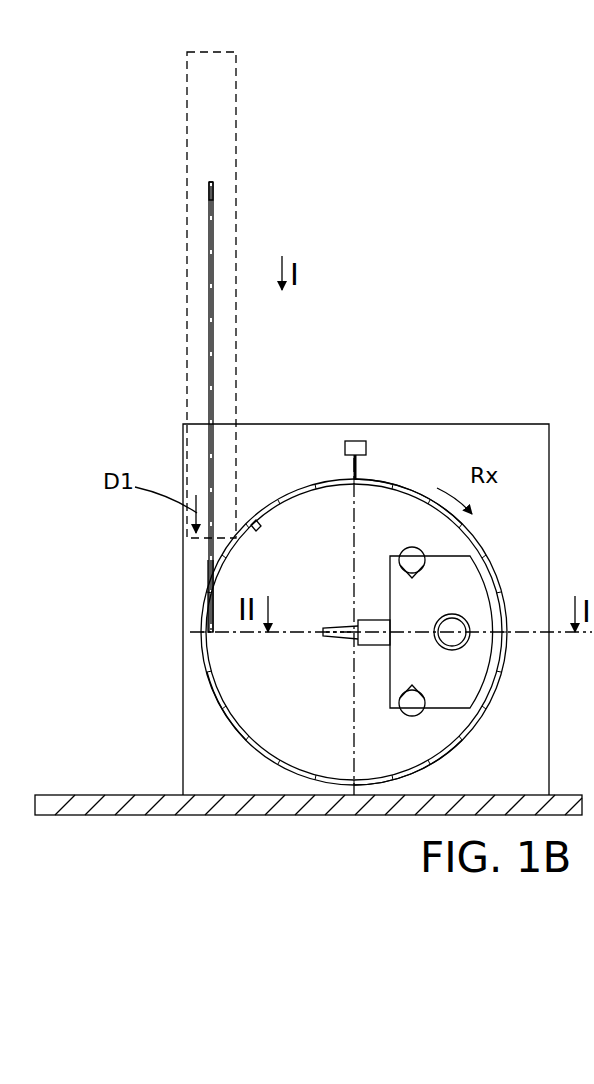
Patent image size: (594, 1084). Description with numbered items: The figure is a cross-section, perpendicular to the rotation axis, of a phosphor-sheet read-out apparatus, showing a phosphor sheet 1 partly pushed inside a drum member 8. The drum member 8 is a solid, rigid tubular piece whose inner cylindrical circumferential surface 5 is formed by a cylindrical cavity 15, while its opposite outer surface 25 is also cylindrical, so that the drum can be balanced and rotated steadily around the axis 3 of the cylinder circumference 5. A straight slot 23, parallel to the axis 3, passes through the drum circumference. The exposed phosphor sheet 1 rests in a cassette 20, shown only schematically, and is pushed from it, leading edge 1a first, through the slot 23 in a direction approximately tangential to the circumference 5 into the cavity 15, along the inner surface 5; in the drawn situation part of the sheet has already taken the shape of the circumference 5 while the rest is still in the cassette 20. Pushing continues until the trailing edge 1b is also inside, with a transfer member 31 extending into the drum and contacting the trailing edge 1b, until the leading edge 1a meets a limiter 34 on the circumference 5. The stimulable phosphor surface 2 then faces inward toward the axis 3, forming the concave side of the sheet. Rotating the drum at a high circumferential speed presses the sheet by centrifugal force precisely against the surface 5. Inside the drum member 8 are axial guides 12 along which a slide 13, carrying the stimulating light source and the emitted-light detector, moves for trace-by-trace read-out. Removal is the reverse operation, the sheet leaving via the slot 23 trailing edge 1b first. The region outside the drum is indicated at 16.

The phosphor sheet 1 is at (208, 367).
The leading edge 1a is at (258, 733).
The trailing edge 1b is at (206, 178).
The stimulable phosphor surface 2 is at (220, 668).
The axis 3 is at (355, 637).
The cylindrical circumferential surface 5 is at (420, 762).
The drum member 8 is at (502, 540).
The guides 12 is at (409, 558).
The slide 13 is at (426, 610).
The cylindrical cavity 15 is at (292, 701).
The exterior region 16 is at (398, 337).
The cassette 20 is at (236, 194).
The slot 23 is at (207, 585).
The outer surface 25 is at (406, 482).
The transfer member 31 is at (358, 440).
The limiter 34 is at (257, 520).